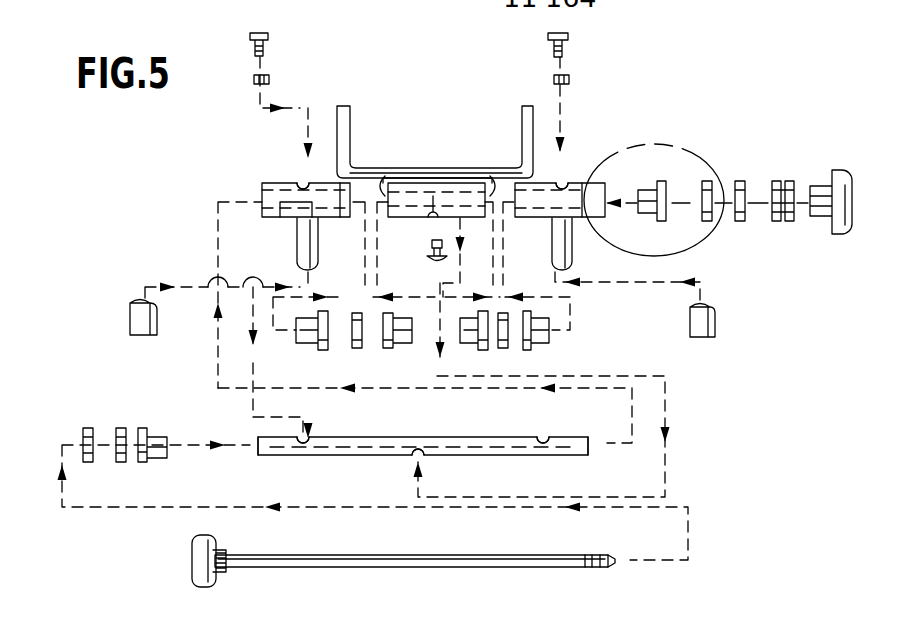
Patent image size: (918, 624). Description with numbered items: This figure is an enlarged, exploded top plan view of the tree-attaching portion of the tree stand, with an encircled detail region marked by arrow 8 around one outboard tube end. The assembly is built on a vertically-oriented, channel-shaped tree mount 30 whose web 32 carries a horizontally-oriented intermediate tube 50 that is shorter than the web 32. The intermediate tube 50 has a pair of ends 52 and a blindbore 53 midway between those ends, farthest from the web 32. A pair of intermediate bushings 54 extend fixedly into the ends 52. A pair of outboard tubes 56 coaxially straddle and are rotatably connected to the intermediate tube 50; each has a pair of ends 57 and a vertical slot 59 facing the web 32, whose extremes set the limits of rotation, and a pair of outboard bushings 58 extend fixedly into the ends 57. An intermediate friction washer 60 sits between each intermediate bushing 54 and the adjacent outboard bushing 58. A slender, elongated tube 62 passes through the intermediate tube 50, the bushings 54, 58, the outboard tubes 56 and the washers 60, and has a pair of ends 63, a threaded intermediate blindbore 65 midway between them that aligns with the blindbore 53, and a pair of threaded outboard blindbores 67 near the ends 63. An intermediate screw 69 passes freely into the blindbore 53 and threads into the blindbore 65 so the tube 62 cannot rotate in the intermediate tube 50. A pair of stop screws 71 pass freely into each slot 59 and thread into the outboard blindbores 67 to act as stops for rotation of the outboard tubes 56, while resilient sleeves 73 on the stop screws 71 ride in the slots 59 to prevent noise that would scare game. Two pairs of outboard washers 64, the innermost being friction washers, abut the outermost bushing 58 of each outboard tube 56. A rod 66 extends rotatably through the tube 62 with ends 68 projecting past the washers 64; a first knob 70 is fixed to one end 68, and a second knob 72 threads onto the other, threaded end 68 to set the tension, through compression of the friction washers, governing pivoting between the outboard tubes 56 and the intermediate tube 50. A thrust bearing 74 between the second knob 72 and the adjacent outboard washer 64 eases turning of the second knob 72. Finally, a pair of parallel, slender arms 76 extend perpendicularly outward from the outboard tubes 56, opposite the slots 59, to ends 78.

The fastener assembly 8 is at (680, 138).
The tree mount 30 is at (466, 158).
The web 32 is at (431, 170).
The intermediate tube 50 is at (406, 190).
The ends 52 is at (392, 183).
The blindbore 53 is at (433, 222).
The intermediate bushings 54 is at (392, 350).
The outboard tubes 56 is at (272, 183).
The ends 57 is at (262, 192).
The outboard bushings 58 is at (662, 185).
The slot 59 is at (303, 178).
The intermediate friction washers 60 is at (357, 350).
The tube 62 is at (487, 441).
The ends 63 is at (258, 440).
The outboard washers 64 is at (740, 222).
The threaded intermediate blindbore 65 is at (431, 437).
The rod 66 is at (412, 555).
The threaded outboard blindbores 67 is at (311, 437).
The ends 68 is at (225, 571).
The intermediate screw 69 is at (430, 262).
The first knob 70 is at (192, 555).
The stop screws 71 is at (258, 32).
The second knob 72 is at (838, 232).
The resilient sleeves 73 is at (255, 78).
The thrust bearing 74 is at (785, 185).
The arms 76 is at (303, 245).
The ends 78 is at (130, 322).